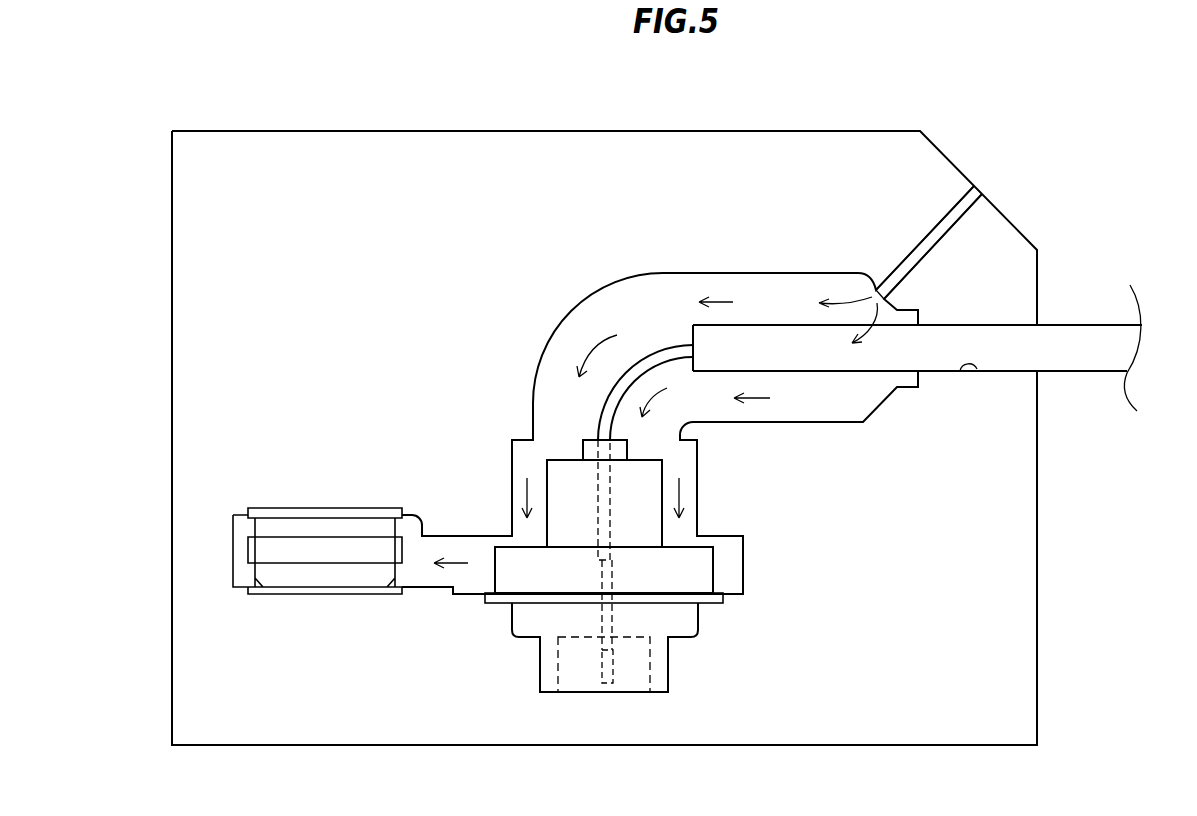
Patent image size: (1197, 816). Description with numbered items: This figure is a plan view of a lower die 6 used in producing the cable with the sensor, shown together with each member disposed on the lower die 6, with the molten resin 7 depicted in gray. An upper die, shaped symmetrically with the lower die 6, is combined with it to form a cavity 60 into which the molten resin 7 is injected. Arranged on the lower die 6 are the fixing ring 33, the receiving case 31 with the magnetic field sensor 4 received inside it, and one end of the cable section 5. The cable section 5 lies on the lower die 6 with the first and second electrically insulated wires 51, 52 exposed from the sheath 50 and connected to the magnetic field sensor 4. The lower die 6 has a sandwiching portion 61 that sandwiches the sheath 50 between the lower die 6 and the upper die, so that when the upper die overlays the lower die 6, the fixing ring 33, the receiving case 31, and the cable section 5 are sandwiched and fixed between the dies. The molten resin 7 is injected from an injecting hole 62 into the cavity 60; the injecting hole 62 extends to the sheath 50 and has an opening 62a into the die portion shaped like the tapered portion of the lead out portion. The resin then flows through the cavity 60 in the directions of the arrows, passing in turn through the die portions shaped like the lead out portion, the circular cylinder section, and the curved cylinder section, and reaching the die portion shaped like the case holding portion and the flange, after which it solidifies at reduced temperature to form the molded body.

The magnetic field sensor 4 is at (603, 703).
The cable section 5 is at (1088, 296).
The lower die 6 is at (297, 131).
The molten resin 7 is at (580, 337).
The receiving case 31 is at (513, 691).
The fixing ring 33 is at (297, 507).
The sheath 50 is at (1062, 364).
The first electrically insulated wire 51 is at (612, 336).
The second electrically insulated wire 52 is at (647, 348).
The cavity 60 is at (525, 388).
The sandwiching portion 61 is at (975, 370).
The injecting hole 62 is at (980, 192).
The opening 62a is at (876, 295).